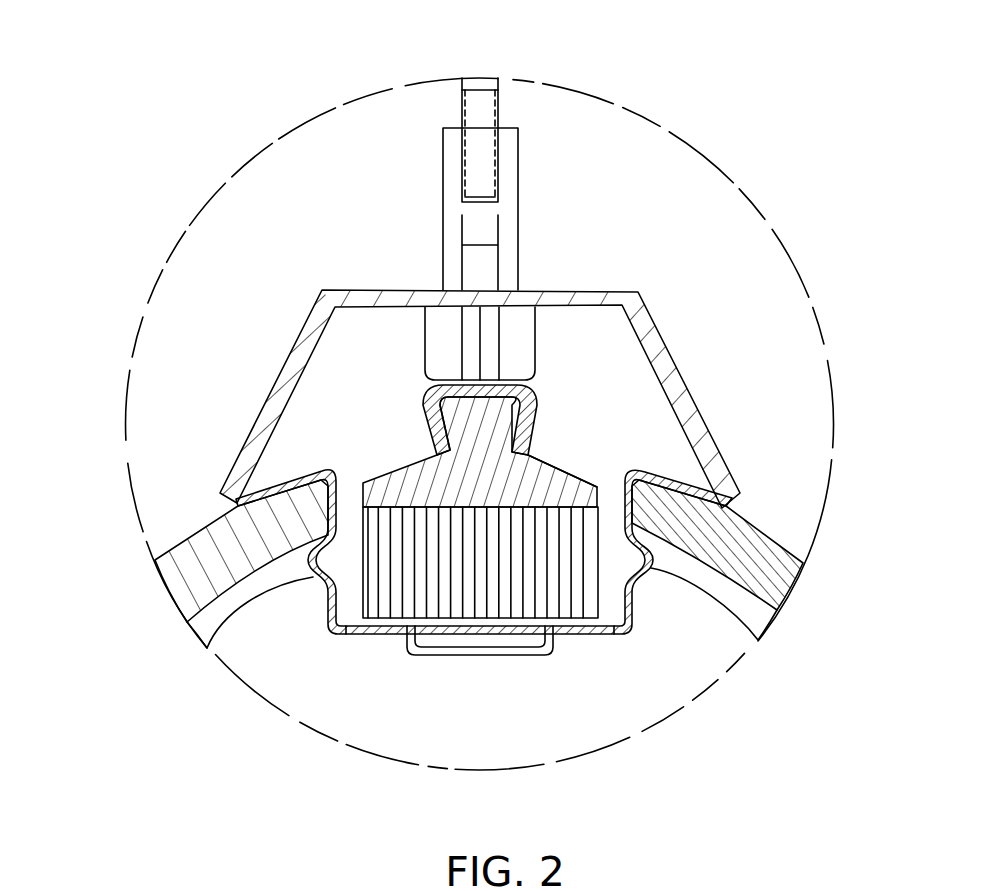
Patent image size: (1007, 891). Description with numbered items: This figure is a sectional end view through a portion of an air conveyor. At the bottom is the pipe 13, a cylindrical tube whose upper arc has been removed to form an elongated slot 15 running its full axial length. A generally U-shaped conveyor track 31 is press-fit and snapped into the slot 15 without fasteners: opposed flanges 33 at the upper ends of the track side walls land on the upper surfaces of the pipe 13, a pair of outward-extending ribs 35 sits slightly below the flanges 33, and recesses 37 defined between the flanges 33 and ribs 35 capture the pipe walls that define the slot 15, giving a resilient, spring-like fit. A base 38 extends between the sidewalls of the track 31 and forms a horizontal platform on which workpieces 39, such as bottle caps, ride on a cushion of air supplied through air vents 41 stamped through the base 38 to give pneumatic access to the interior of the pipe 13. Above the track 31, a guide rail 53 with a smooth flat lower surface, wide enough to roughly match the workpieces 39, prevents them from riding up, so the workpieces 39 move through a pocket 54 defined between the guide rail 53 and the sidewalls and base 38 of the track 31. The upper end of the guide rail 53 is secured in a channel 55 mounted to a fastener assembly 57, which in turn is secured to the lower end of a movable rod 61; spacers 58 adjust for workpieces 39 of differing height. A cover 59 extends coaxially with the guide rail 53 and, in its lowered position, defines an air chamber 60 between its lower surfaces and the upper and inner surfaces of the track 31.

The pipe 13 is at (768, 568).
The slot 15 is at (622, 527).
The conveyor track 31 is at (598, 654).
The flanges 33 is at (298, 488).
The ribs 35 is at (206, 633).
The recesses 37 is at (148, 546).
The base 38 is at (368, 634).
The workpieces 39 is at (574, 595).
The air vents 41 is at (480, 657).
The guide rail 53 is at (560, 467).
The pocket 54 is at (338, 568).
The channel 55 is at (538, 407).
The fastener assembly 57 is at (518, 170).
The spacers 58 is at (536, 343).
The cover 59 is at (272, 386).
The air chamber 60 is at (372, 343).
The movable rod 61 is at (478, 107).